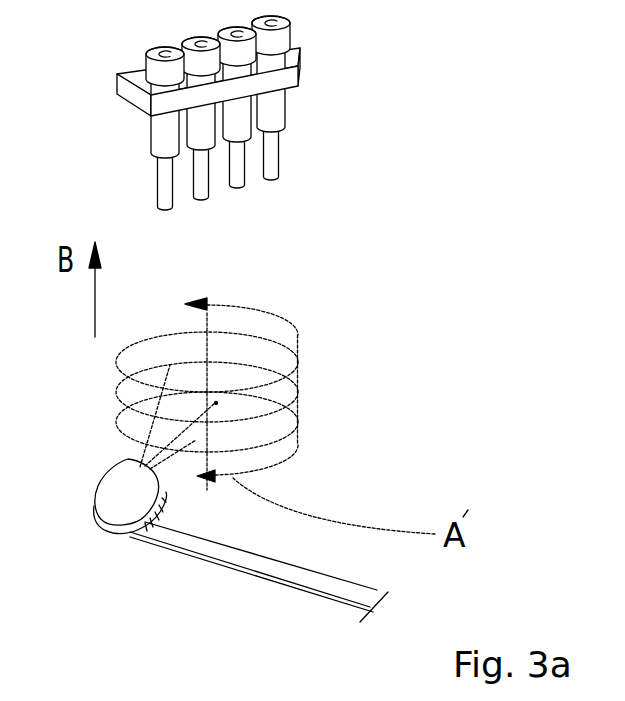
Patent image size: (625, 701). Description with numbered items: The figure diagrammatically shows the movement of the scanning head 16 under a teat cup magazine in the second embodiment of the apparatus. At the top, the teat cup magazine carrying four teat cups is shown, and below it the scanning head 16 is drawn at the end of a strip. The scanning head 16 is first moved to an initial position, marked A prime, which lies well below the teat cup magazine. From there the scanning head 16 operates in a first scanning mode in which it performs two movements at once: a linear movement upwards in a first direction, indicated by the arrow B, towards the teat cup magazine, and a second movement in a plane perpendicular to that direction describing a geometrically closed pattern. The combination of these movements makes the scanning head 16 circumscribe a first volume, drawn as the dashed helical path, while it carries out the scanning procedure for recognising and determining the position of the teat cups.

The scanning head 16 is at (117, 483).